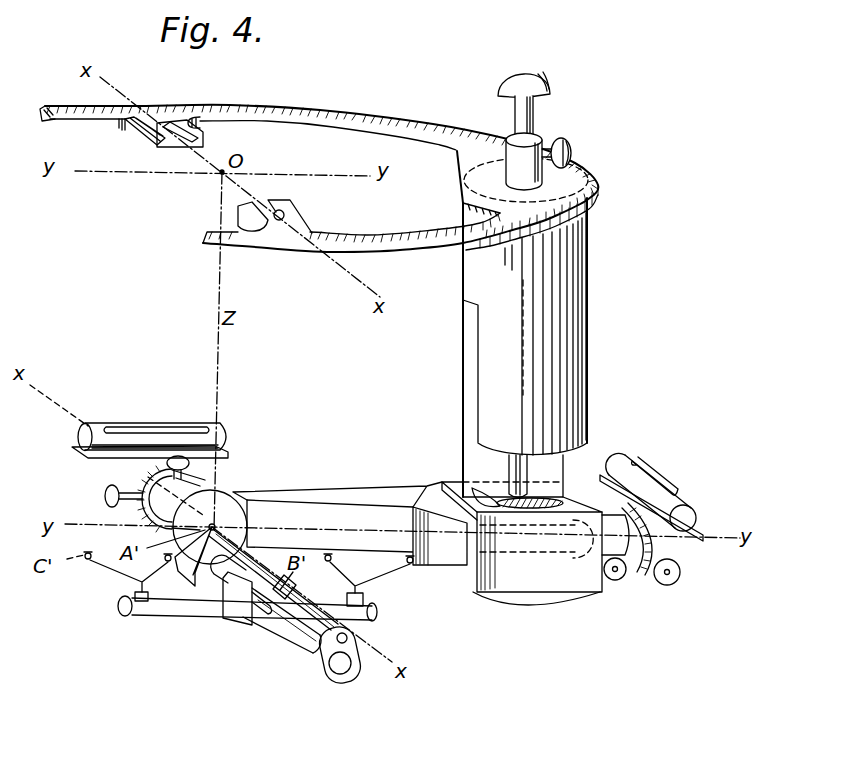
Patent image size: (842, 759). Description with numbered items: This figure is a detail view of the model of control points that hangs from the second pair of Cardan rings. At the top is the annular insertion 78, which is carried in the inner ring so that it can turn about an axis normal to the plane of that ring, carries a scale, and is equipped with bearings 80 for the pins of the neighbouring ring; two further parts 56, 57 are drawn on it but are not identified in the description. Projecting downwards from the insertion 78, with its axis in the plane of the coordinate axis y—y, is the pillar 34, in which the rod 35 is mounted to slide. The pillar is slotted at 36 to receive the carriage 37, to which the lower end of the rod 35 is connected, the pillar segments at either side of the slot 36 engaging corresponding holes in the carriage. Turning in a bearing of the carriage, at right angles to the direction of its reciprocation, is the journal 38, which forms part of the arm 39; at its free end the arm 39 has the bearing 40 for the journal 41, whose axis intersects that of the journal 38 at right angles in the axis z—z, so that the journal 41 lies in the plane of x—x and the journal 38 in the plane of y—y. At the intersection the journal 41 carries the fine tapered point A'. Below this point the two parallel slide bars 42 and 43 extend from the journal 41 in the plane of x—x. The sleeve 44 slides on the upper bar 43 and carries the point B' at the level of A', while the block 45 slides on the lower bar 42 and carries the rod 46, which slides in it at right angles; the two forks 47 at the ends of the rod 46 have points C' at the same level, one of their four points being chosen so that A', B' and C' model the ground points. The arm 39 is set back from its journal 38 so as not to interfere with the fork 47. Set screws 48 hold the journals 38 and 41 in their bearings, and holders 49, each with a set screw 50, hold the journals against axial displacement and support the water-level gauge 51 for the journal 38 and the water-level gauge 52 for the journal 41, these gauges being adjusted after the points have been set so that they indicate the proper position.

The pillar 34 is at (572, 317).
The rod 35 is at (520, 477).
The slot 36 is at (467, 360).
The carriage 37 is at (520, 573).
The journal 38 is at (550, 545).
The arm 39 is at (287, 493).
The bearing 40 is at (213, 490).
The journal 41 is at (122, 483).
The slide bar 42 is at (322, 640).
The slide bar 43 is at (320, 620).
The sleeve 44 is at (276, 612).
The block 45 is at (252, 610).
The rod 46 is at (158, 614).
The forks 47 is at (142, 583).
The set screws 48 is at (190, 460).
The holders 49 is at (653, 547).
The set screw 50 is at (670, 573).
The water-level gauge 51 is at (680, 512).
The water-level gauge 52 is at (80, 434).
The knob 56 is at (547, 84).
The thumb screw 57 is at (572, 152).
The annular insertion 78 is at (302, 115).
The bearings 80 is at (148, 135).